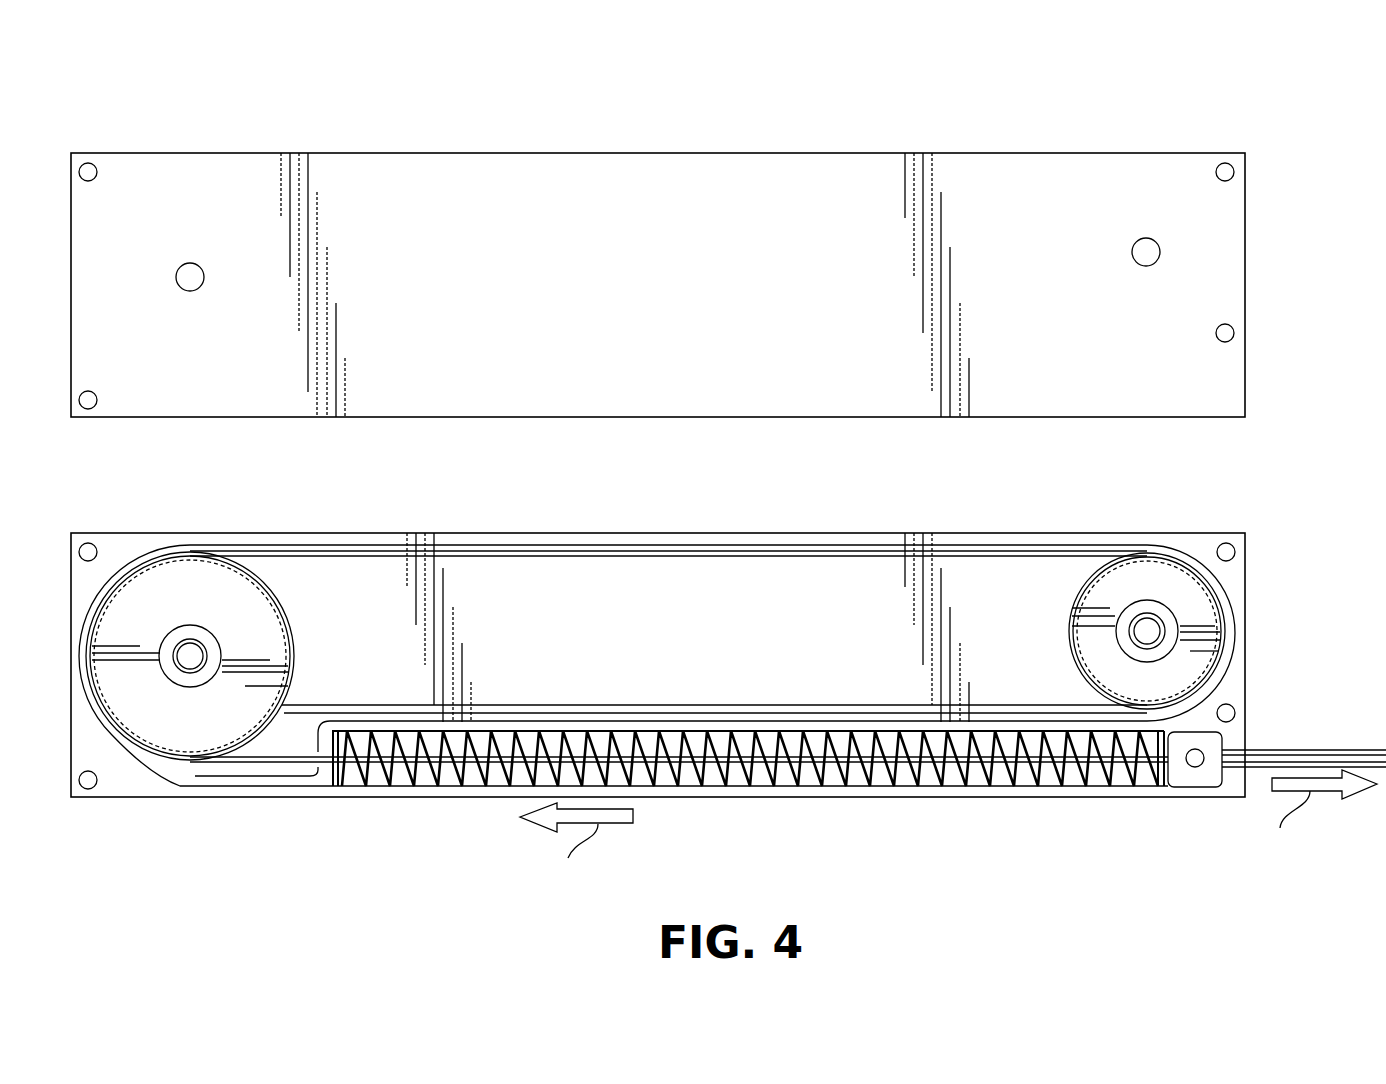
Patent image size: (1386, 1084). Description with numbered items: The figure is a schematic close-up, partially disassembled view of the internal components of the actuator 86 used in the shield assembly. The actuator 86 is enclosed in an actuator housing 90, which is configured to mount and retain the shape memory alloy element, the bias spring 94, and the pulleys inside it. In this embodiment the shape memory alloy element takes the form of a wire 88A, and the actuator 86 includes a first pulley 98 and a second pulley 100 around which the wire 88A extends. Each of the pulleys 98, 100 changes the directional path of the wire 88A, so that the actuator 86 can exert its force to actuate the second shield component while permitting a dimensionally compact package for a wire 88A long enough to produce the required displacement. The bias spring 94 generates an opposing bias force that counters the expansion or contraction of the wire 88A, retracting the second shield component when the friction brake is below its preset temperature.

The actuator 86 is at (728, 471).
The actuator housing 90 is at (1223, 420).
The first pulley 98 is at (188, 580).
The second pulley 100 is at (1157, 582).
The wire embodiment of the SMA element 88A is at (280, 758).
The bias spring 94 is at (838, 778).